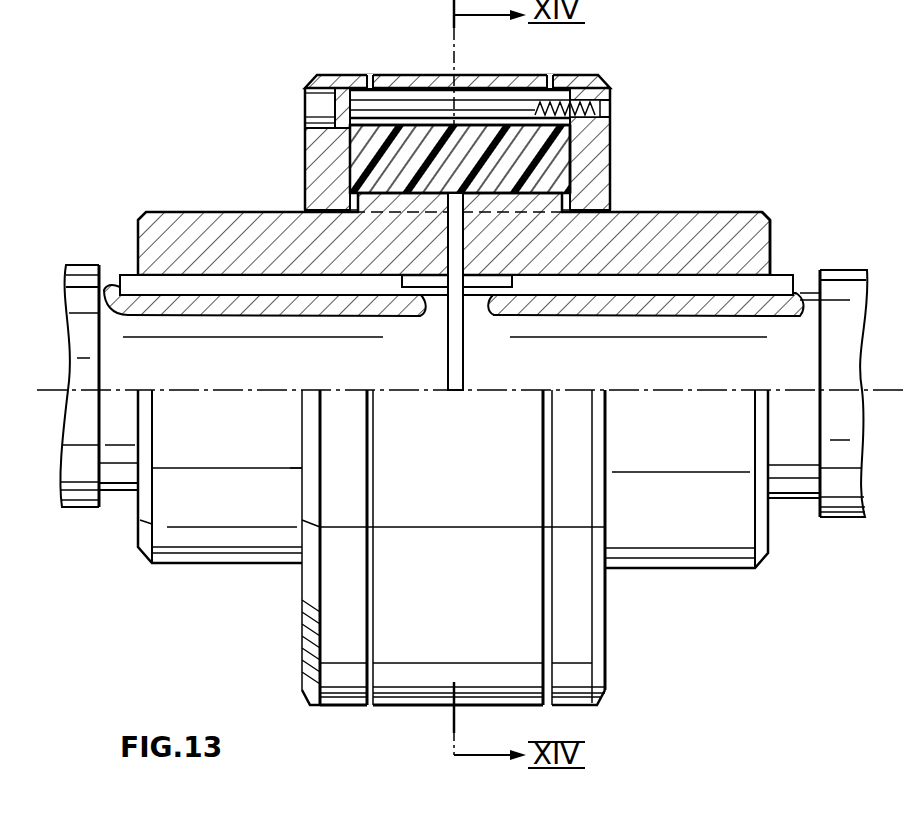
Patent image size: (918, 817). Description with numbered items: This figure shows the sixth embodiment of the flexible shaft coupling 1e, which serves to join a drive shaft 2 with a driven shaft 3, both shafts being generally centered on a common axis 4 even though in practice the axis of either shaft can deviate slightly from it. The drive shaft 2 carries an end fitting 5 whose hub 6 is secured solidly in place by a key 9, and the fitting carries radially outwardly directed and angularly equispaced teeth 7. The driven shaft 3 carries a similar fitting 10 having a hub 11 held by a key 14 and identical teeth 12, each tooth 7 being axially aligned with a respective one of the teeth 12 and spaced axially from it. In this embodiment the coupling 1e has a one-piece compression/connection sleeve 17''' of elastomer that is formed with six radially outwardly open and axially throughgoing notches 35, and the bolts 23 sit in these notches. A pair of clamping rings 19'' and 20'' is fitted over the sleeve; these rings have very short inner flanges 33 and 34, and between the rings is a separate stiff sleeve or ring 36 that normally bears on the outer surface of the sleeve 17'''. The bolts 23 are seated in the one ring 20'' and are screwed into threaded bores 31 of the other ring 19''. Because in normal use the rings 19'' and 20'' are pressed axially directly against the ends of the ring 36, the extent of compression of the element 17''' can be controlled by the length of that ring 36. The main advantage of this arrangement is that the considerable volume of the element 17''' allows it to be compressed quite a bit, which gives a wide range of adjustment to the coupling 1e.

The coupling 1e is at (632, 594).
The drive shaft 2 is at (798, 472).
The driven shaft 3 is at (120, 468).
The common axis 4 is at (55, 388).
The end fitting 5 is at (727, 543).
The hub 6 is at (757, 240).
The teeth 7 is at (560, 190).
The key 9 is at (700, 290).
The fitting 10 is at (214, 540).
The hub 11 is at (152, 238).
The teeth 12 is at (305, 163).
The key 14 is at (200, 283).
The one-piece compression/connection sleeve 17''' is at (637, 158).
The clamping ring 19'' is at (616, 565).
The clamping ring 20'' is at (281, 548).
The bolts 23 is at (378, 103).
The threaded bores 31 is at (610, 108).
The inner flange 33 is at (593, 75).
The inner flange 34 is at (342, 74).
The notches 35 is at (417, 117).
The stiff sleeve or ring 36 is at (407, 640).